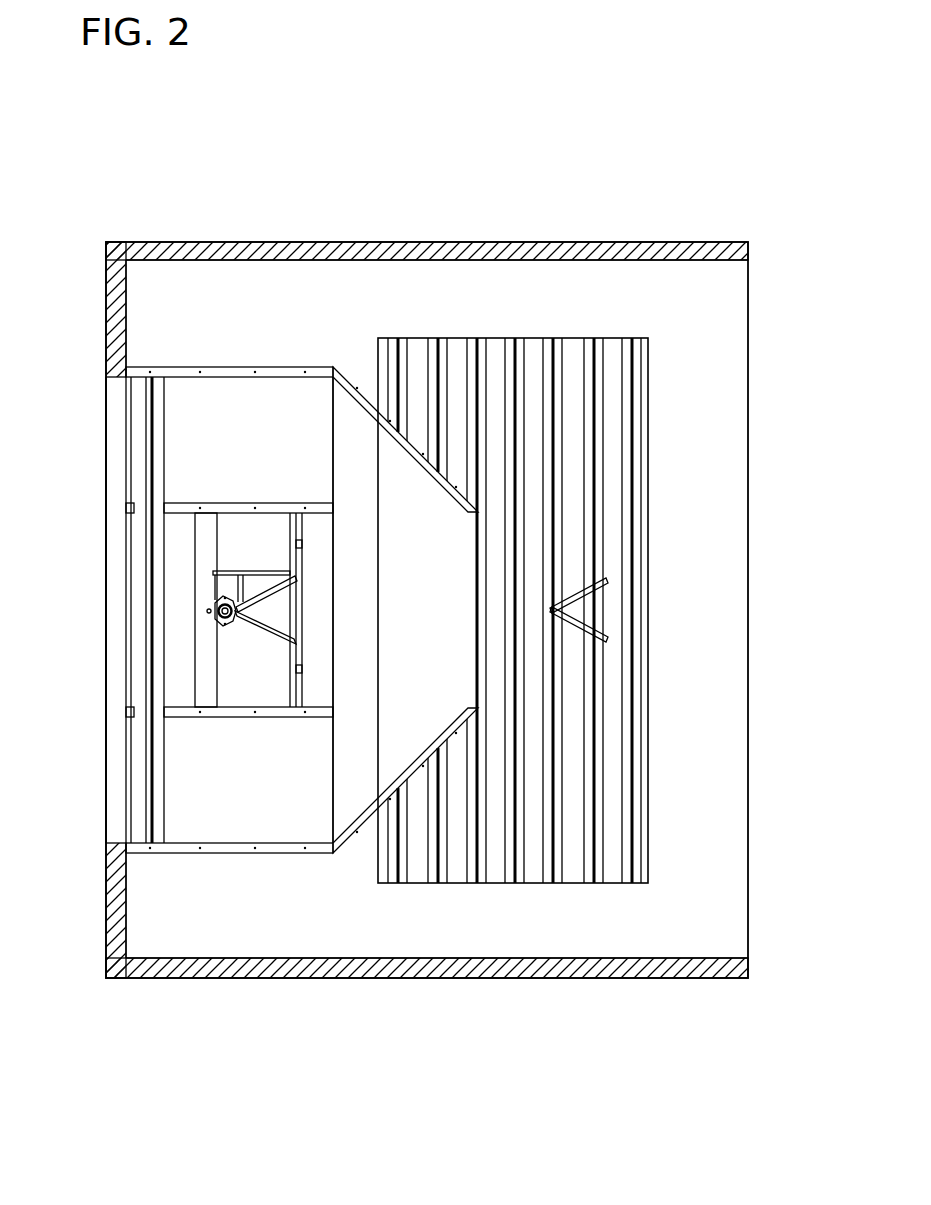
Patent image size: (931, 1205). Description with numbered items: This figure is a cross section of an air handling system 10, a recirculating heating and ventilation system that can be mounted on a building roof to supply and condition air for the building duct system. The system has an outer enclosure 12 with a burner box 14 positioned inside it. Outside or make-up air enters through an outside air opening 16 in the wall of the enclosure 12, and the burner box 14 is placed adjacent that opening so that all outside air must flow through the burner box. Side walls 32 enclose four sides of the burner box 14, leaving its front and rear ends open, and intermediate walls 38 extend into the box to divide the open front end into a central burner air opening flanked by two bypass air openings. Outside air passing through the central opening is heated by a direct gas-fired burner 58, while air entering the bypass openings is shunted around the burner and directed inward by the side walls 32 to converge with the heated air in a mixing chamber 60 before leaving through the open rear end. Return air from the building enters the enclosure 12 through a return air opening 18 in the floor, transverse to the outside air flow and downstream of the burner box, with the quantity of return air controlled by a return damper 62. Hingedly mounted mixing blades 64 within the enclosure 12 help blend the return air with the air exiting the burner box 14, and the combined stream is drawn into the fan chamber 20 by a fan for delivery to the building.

The air handling system 10 is at (720, 166).
The outer enclosure 12 is at (393, 240).
The burner box 14 is at (328, 357).
The outside air opening 16 is at (117, 383).
The return air opening 18 is at (455, 872).
The fan chamber 20 is at (686, 749).
The side walls 32 is at (220, 370).
The intermediate walls 38 is at (237, 503).
The direct gas-fired burner 58 is at (248, 598).
The mixing chamber 60 is at (379, 614).
The return damper 62 is at (598, 383).
The mixing blades 64 is at (577, 592).